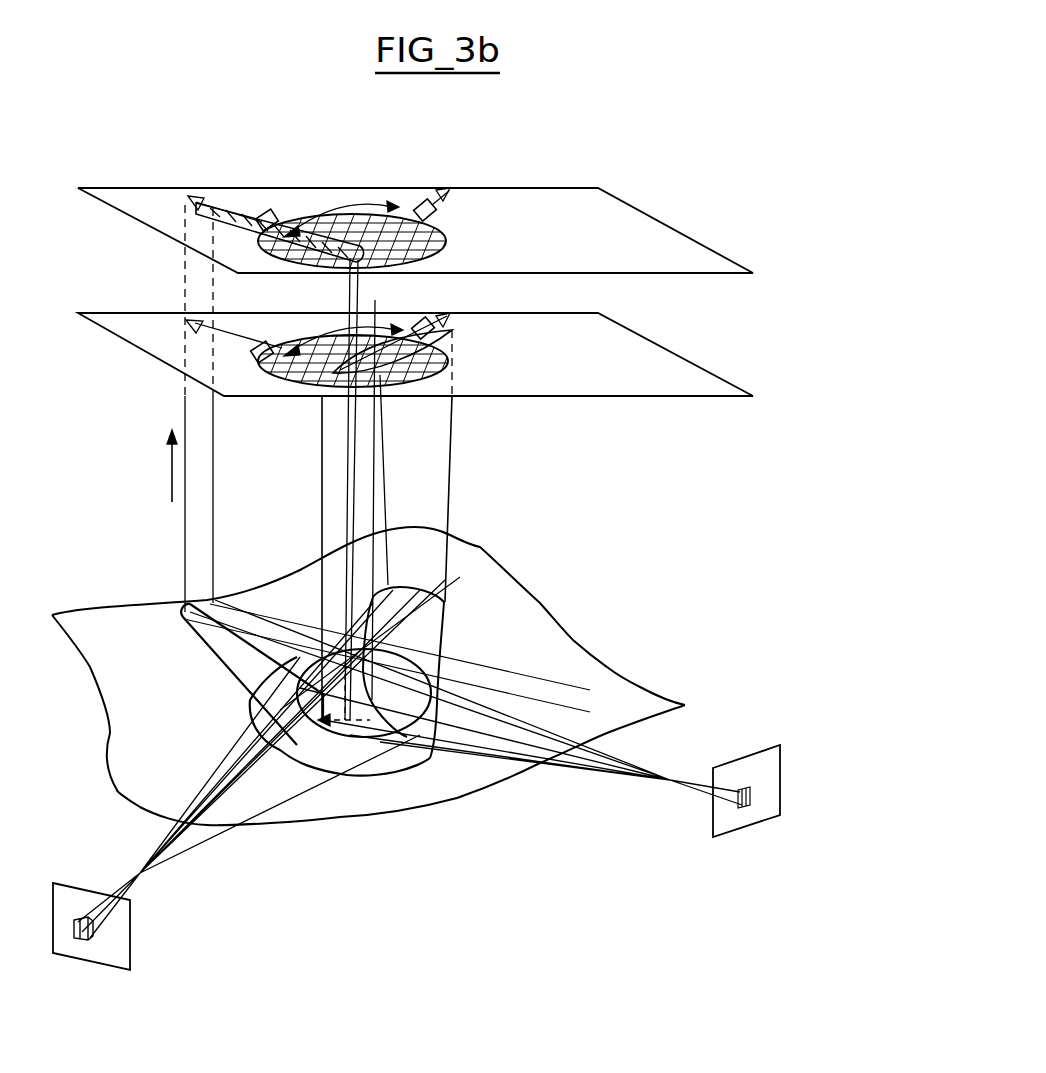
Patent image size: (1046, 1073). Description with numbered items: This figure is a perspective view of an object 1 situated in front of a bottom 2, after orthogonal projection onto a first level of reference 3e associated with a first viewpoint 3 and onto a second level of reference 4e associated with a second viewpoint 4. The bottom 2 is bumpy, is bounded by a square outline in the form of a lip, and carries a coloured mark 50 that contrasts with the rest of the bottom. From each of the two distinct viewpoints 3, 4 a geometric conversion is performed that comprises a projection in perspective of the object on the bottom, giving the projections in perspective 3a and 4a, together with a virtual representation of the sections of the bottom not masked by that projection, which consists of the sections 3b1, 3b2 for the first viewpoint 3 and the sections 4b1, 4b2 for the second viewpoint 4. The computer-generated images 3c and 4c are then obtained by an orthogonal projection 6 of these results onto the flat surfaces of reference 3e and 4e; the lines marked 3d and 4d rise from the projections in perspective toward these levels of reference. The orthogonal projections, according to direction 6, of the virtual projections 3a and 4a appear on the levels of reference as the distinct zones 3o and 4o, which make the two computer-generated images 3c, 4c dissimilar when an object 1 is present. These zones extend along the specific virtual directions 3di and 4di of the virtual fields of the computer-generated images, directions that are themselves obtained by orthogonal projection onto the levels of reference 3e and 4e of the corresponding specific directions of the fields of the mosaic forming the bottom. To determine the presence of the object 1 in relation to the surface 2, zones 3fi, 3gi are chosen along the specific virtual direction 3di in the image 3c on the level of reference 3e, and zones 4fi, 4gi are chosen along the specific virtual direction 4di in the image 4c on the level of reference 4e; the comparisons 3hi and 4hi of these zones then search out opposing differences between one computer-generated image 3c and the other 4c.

The object 1 is at (428, 722).
The bottom 2 is at (426, 547).
The first viewpoint 3 is at (485, 718).
The second viewpoint 4 is at (249, 775).
The orthogonal projection direction 6 is at (160, 470).
The coloured mark 50 is at (360, 772).
The projection in perspective of the object 3a is at (216, 642).
The section of the virtual representation of the bottom 3b1 is at (395, 765).
The section of the virtual representation of the bottom 3b2 is at (298, 802).
The computer-generated image 3c is at (344, 216).
The first beam axis 3d is at (200, 322).
The specific virtual direction 3di is at (208, 197).
The level of reference 3e is at (627, 228).
The zone 3fi is at (289, 216).
The zone 3gi is at (407, 203).
The comparison 3hi is at (341, 214).
The orthogonal projection of the virtual projection 3o is at (240, 213).
The projection in perspective of the object 4a is at (418, 600).
The section of the virtual representation of the bottom 4b1 is at (340, 716).
The section of the virtual representation of the bottom 4b2 is at (265, 819).
The computer-generated image 4c is at (310, 382).
The second beam direction vector 4d is at (452, 196).
The specific virtual direction 4di is at (455, 320).
The level of reference 4e is at (652, 358).
The zone 4fi is at (283, 345).
The zone 4gi is at (410, 328).
The comparison 4hi is at (343, 332).
The orthogonal projection of the virtual projection 4o is at (416, 360).